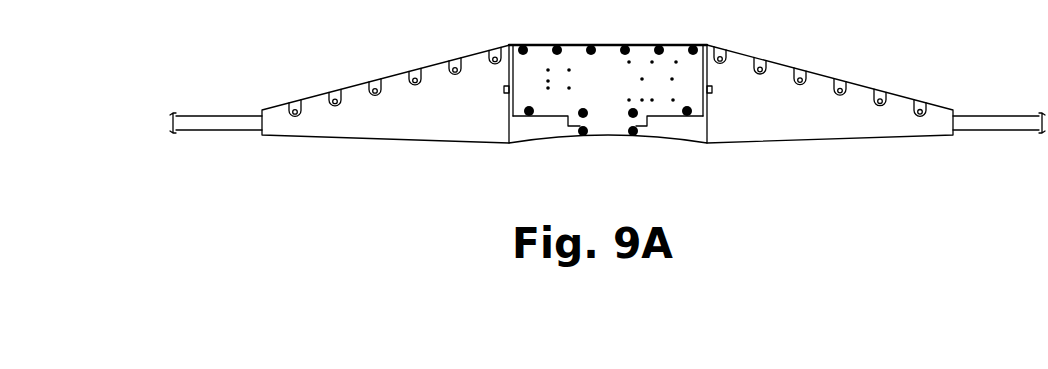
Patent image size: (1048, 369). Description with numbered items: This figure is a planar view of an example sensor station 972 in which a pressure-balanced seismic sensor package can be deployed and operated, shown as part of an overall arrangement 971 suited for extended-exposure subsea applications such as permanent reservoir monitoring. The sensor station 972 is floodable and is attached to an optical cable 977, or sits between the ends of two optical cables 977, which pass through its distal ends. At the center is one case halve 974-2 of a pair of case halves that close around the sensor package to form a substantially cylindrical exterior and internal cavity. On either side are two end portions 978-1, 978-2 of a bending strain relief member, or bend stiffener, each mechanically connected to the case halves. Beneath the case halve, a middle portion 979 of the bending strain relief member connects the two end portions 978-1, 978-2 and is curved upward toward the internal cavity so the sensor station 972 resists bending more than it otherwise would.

The shelf assembly 971 is at (238, 49).
The sensor station 972 is at (418, 48).
The case halve 974-2 is at (680, 72).
The optical cable 977 is at (208, 130).
The end portion of bending strain relief member 978-1 is at (348, 140).
The end portion of bending strain relief member 978-2 is at (893, 137).
The middle portion of bending strain relief member 979 is at (707, 150).